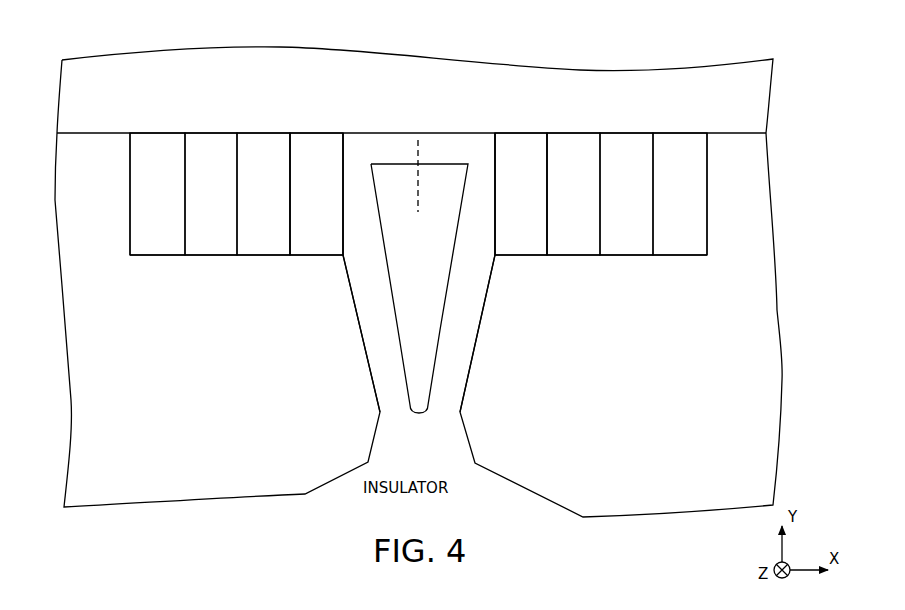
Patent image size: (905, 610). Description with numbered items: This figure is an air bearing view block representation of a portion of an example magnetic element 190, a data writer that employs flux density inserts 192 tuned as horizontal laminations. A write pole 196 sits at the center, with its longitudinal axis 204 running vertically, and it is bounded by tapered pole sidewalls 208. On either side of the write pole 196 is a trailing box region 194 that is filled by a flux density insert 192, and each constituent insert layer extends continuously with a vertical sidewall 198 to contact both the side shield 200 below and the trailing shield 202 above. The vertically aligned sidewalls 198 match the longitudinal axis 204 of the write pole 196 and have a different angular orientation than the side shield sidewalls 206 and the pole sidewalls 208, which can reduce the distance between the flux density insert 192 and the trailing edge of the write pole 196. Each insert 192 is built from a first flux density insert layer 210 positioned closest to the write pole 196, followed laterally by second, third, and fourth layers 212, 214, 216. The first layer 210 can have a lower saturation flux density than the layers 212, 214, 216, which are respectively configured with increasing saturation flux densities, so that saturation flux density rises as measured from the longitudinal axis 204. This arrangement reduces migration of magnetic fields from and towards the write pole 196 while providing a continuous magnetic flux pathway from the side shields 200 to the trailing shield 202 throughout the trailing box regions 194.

The magnetic element 190 is at (113, 46).
The flux density insert 192 is at (128, 253).
The trailing box region 194 is at (200, 256).
The write pole 196 is at (419, 247).
The vertical sidewall 198 is at (288, 244).
The side shield 200 is at (413, 262).
The trailing shield 202 is at (411, 109).
The longitudinal axis 204 is at (418, 190).
The side shield sidewall 206 is at (377, 403).
The pole sidewall 208 is at (438, 353).
The first flux density insert layer 210 is at (418, 194).
The second flux density insert layer 212 is at (418, 194).
The third flux density insert layer 214 is at (419, 194).
The fourth flux density insert layer 216 is at (418, 194).